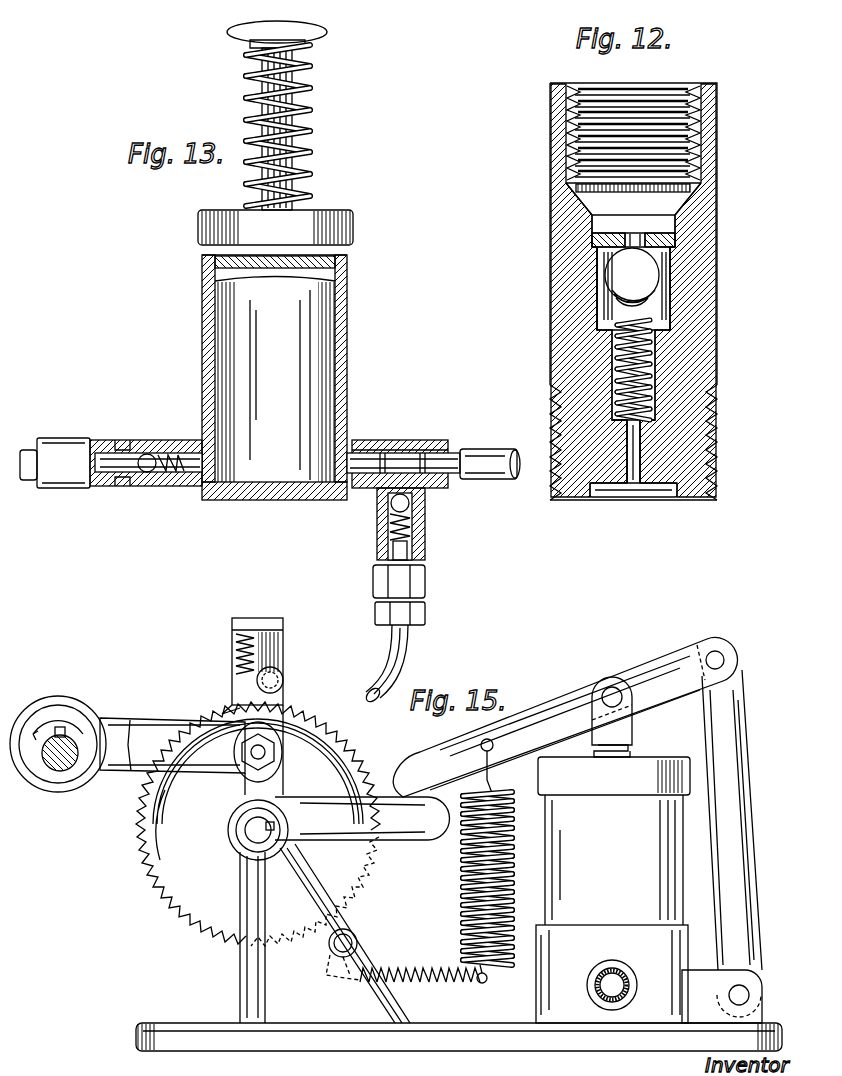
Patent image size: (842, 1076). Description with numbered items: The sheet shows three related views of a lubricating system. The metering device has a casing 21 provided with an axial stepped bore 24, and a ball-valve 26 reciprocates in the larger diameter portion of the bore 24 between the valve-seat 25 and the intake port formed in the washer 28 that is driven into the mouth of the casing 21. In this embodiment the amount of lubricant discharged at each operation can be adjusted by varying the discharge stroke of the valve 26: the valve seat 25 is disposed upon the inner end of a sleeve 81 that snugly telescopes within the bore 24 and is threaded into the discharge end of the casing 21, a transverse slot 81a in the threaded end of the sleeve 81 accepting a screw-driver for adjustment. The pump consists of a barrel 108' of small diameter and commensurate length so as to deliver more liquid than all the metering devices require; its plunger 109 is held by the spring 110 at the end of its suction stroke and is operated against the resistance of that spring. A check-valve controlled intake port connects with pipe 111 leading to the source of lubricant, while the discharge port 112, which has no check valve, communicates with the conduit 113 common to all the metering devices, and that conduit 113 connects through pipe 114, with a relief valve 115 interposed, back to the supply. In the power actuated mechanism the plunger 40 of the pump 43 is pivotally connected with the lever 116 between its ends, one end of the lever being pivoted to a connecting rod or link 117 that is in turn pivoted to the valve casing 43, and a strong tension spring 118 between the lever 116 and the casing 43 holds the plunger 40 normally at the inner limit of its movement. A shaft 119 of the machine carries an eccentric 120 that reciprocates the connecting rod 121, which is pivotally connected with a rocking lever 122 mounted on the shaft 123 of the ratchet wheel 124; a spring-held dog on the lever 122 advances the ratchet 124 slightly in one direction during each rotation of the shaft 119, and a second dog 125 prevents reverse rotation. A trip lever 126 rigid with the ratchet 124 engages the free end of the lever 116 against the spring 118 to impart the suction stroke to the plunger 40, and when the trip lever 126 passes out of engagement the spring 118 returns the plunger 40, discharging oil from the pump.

In FIG. 12, the casing 21 is at (718, 237).
In FIG. 12, the axial stepped bore 24 is at (652, 298).
In FIG. 12, the valve-seat 25 is at (595, 348).
In FIG. 12, the ball-valve 26 is at (662, 272).
In FIG. 12, the washer 28 is at (592, 238).
In FIG. 12, the sleeve 81 is at (662, 338).
In FIG. 12, the transverse slot 81a is at (660, 493).
In FIG. 13, the barrel 108' is at (299, 355).
In FIG. 13, the plunger 109 is at (308, 110).
In FIG. 13, the spring 110 is at (306, 138).
In FIG. 13, the pipe 111 is at (27, 442).
In FIG. 13, the discharge port 112 is at (356, 437).
In FIG. 13, the conduit 113 is at (458, 447).
In FIG. 13, the pipe 114 is at (415, 650).
In FIG. 13, the relief valve 115 is at (422, 513).
In FIG. 15, the lever 116 is at (663, 660).
In FIG. 15, the connecting rod or link 117 is at (745, 715).
In FIG. 15, the tension spring 118 is at (460, 888).
In FIG. 15, the shaft 119 is at (55, 772).
In FIG. 15, the eccentric 120 is at (92, 692).
In FIG. 15, the connecting rod 121 is at (140, 712).
In FIG. 15, the rocking lever 122 is at (284, 662).
In FIG. 15, the shaft 123 is at (248, 820).
In FIG. 15, the ratchet wheel 124 is at (150, 852).
In FIG. 15, the second dog 125 is at (365, 935).
In FIG. 15, the trip lever 126 is at (405, 840).
In FIG. 15, the plunger 40 is at (634, 728).
In FIG. 15, the pump 43 is at (660, 942).